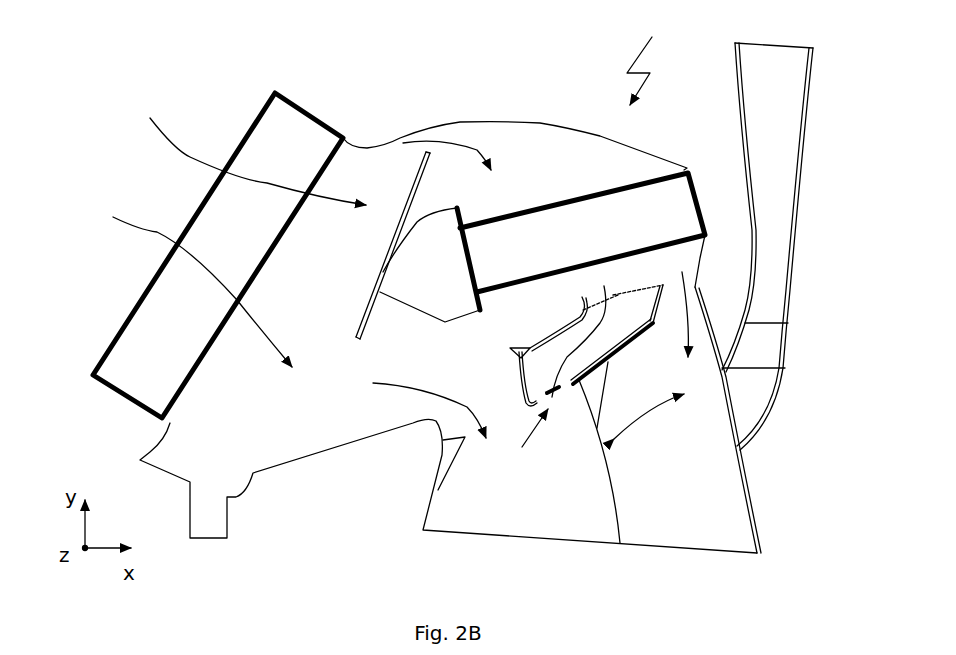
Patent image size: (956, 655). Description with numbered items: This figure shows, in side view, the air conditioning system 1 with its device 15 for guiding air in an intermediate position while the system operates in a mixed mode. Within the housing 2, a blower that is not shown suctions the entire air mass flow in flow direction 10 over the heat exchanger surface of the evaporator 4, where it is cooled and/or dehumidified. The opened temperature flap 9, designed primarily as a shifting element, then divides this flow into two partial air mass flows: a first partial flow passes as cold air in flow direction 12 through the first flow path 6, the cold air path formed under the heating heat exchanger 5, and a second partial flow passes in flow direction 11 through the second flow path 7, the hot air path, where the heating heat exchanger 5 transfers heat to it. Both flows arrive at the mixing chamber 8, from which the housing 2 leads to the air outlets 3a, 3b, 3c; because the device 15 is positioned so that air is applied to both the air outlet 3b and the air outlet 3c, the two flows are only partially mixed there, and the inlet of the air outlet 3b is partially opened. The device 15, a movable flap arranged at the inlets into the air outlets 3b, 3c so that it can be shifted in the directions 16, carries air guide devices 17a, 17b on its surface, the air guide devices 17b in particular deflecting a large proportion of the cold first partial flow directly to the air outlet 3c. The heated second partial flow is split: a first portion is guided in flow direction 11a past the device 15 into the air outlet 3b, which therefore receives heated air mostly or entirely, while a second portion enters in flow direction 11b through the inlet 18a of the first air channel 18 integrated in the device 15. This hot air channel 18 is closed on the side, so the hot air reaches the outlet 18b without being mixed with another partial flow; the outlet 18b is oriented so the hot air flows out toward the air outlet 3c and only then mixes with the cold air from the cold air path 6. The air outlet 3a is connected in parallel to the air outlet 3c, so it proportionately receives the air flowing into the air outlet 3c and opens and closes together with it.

The air conditioning system 1 is at (646, 57).
The housing 2 is at (458, 123).
The air outlet 3a is at (760, 99).
The air outlet 3b is at (658, 521).
The air outlet 3c is at (508, 521).
The evaporator 4 is at (262, 140).
The heating heat exchanger 5 is at (593, 220).
The first flow path 6 is at (386, 371).
The second flow path 7 is at (524, 176).
The mixing chamber 8 is at (543, 316).
The temperature flap 9 is at (400, 225).
The flow direction 10 is at (157, 230).
The flow direction 11 is at (477, 150).
The flow direction 11a is at (693, 323).
The flow direction 11b is at (522, 442).
The flow direction 12 is at (417, 388).
The device for guiding air 15 is at (522, 370).
The directions 16 is at (660, 411).
The air guide device 17a is at (586, 300).
The air guide device 17b is at (517, 346).
The first air channel 18 is at (605, 345).
The inlet 18a is at (618, 297).
The outlet 18b is at (558, 392).